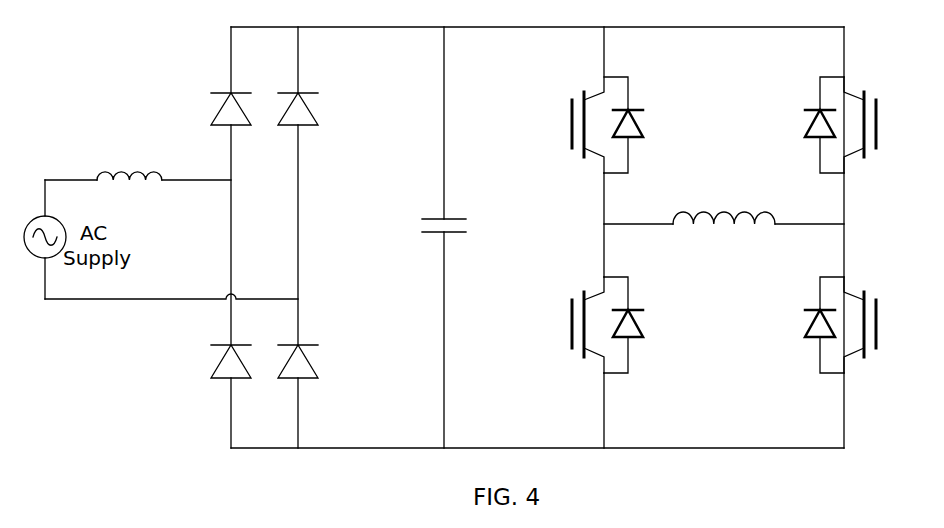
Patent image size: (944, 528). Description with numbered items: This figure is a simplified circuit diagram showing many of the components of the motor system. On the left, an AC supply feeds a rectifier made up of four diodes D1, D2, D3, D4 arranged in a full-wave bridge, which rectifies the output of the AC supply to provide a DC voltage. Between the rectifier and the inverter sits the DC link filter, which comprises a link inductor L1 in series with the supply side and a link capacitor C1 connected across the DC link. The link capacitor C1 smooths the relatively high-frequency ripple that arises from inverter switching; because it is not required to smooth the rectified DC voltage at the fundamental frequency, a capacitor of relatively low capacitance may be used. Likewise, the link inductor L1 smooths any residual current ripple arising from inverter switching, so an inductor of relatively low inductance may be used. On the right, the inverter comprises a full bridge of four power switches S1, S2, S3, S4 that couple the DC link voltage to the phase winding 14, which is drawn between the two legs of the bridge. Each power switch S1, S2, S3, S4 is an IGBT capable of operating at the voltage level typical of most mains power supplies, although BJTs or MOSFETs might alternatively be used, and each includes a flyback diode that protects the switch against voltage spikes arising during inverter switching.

The link inductor L1 is at (129, 163).
The diode D1 is at (214, 111).
The diode D2 is at (214, 364).
The diode D3 is at (315, 111).
The diode D4 is at (315, 364).
The link capacitor C1 is at (461, 237).
The power switch S1 is at (590, 100).
The power switch S2 is at (590, 325).
The power switch S3 is at (857, 125).
The power switch S4 is at (857, 325).
The phase winding 14 is at (708, 212).